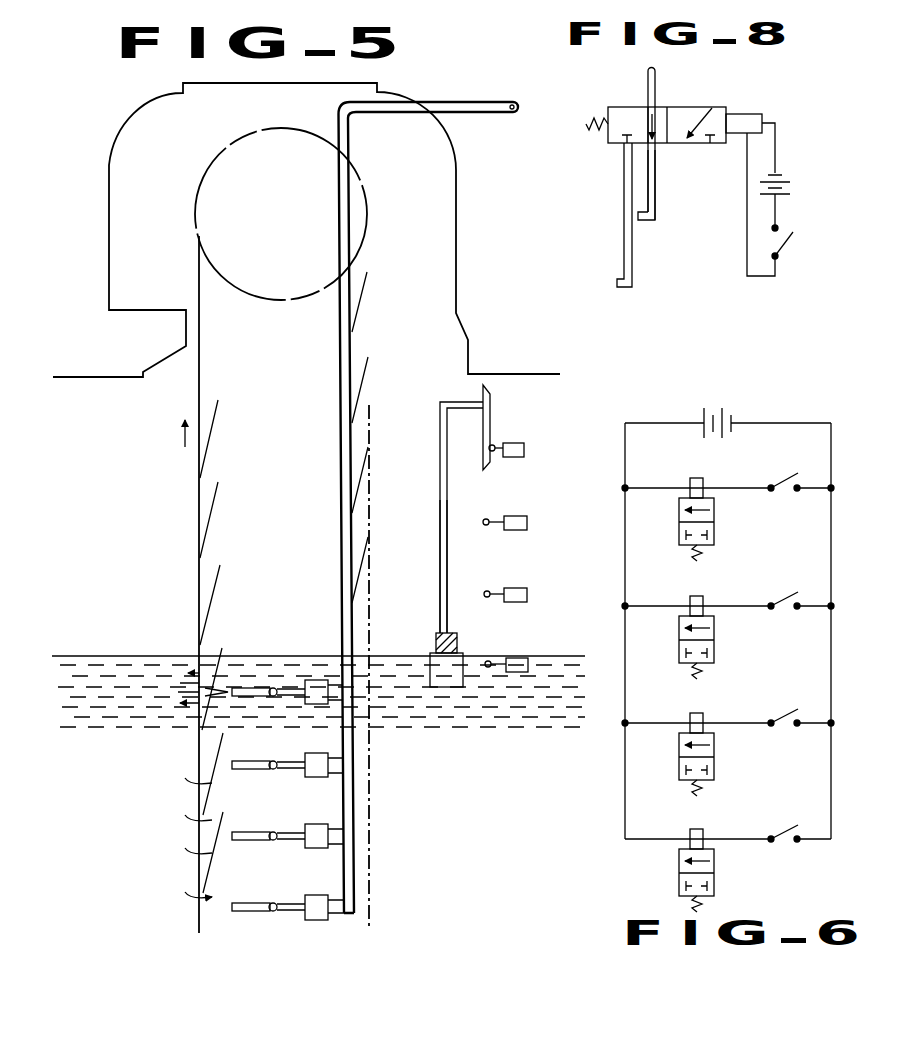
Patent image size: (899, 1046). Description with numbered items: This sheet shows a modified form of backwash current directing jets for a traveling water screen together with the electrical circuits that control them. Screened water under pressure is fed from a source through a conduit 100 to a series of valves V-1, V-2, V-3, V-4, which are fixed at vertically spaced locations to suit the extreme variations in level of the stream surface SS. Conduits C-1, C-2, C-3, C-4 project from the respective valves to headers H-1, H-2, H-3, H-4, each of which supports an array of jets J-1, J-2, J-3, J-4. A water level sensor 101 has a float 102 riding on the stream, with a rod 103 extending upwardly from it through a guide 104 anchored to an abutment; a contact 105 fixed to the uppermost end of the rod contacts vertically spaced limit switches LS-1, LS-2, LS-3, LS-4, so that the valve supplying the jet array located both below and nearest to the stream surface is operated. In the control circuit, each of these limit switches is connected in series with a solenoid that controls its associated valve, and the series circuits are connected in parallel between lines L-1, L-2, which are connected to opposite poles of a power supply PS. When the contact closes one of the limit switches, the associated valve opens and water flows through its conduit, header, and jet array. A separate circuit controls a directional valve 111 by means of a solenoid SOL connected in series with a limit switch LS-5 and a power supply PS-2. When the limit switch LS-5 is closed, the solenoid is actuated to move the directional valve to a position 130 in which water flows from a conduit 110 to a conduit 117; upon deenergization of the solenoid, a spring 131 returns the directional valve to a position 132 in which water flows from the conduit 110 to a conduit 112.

In FIG. 5, the conduit 100 is at (341, 462).
In FIG. 5, the water level sensor 101 is at (436, 411).
In FIG. 5, the float 102 is at (450, 688).
In FIG. 5, the rod 103 is at (440, 515).
In FIG. 5, the guide 104 is at (436, 638).
In FIG. 5, the contact 105 is at (490, 397).
In FIG. 5, the limit switch LS-1 is at (513, 443).
In FIG. 6, the limit switch LS-1 is at (782, 481).
In FIG. 5, the limit switch LS-2 is at (514, 516).
In FIG. 6, the limit switch LS-2 is at (782, 597).
In FIG. 5, the limit switch LS-3 is at (514, 588).
In FIG. 6, the limit switch LS-3 is at (784, 714).
In FIG. 5, the limit switch LS-4 is at (517, 658).
In FIG. 6, the limit switch LS-4 is at (786, 830).
In FIG. 8, the limit switch LS-5 is at (787, 248).
In FIG. 5, the stream surface SS is at (67, 657).
In FIG. 5, the jets J-1 is at (250, 688).
In FIG. 5, the jets J-2 is at (250, 761).
In FIG. 5, the jets J-3 is at (250, 832).
In FIG. 5, the jets J-4 is at (250, 903).
In FIG. 5, the header H-1 is at (271, 697).
In FIG. 5, the header H-2 is at (273, 770).
In FIG. 5, the header H-3 is at (273, 841).
In FIG. 5, the header H-4 is at (274, 912).
In FIG. 5, the conduit C-1 is at (291, 689).
In FIG. 5, the conduit C-2 is at (292, 762).
In FIG. 5, the conduit C-3 is at (293, 833).
In FIG. 5, the conduit C-4 is at (293, 904).
In FIG. 5, the valve V-1 is at (323, 704).
In FIG. 6, the valve V-1 is at (679, 525).
In FIG. 5, the valve V-2 is at (324, 777).
In FIG. 6, the valve V-2 is at (679, 643).
In FIG. 5, the valve V-3 is at (324, 848).
In FIG. 6, the valve V-3 is at (679, 760).
In FIG. 5, the valve V-4 is at (324, 920).
In FIG. 6, the valve V-4 is at (679, 876).
In FIG. 8, the conduit 110 is at (656, 72).
In FIG. 8, the directional valve 111 is at (720, 107).
In FIG. 8, the conduit 112 is at (657, 190).
In FIG. 8, the conduit 117 is at (633, 262).
In FIG. 8, the position 130 is at (690, 110).
In FIG. 8, the spring 131 is at (600, 131).
In FIG. 8, the position 132 is at (632, 110).
In FIG. 8, the solenoid SOL is at (757, 114).
In FIG. 8, the power supply PS-2 is at (790, 181).
In FIG. 6, the power supply PS is at (732, 415).
In FIG. 6, the line L-1 is at (625, 790).
In FIG. 6, the line L-2 is at (831, 790).